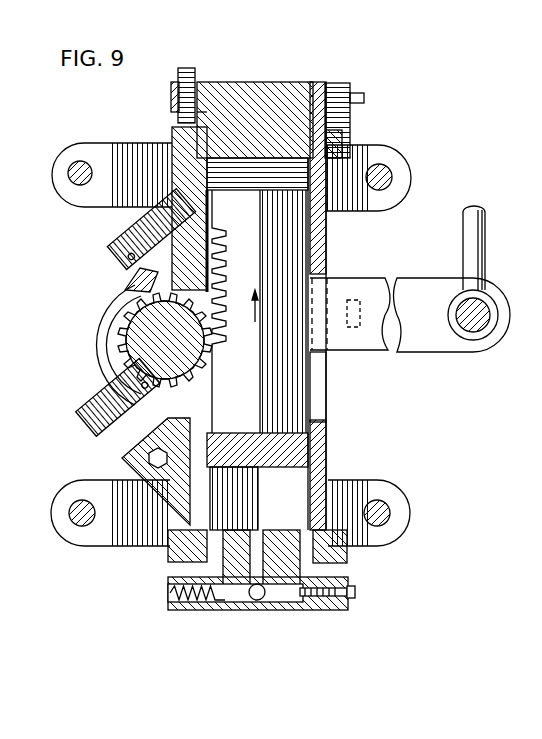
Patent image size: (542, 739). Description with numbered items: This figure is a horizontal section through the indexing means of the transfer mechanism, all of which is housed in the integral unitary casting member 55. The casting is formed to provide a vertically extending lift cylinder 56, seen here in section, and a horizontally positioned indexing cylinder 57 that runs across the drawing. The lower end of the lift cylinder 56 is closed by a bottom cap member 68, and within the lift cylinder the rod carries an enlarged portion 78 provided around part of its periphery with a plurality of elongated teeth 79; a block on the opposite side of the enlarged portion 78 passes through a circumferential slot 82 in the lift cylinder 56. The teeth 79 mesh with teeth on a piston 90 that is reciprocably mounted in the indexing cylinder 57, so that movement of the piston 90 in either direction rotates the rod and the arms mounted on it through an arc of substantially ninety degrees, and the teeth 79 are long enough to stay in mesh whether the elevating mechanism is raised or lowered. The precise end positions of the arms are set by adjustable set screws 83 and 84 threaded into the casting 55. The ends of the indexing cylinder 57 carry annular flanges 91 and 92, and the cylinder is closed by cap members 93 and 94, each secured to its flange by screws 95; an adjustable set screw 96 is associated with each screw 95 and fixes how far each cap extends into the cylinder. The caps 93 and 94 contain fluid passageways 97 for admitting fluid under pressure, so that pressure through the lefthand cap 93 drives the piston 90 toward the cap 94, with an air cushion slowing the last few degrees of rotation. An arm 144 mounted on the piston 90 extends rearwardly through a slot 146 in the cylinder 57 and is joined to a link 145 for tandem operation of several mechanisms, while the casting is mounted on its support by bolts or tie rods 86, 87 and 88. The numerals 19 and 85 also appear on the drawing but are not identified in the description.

The rack 19 is at (226, 262).
The casting member 55 is at (337, 231).
The lift cylinder 56 is at (112, 345).
The indexing cylinder 57 is at (322, 448).
The bottom cap member 68 is at (140, 318).
The enlarged portion 78 is at (128, 352).
The elongated teeth 79 is at (128, 288).
The circumferential slot 82 is at (98, 333).
The adjustable set screw 83 is at (122, 242).
The adjustable set screw 84 is at (120, 440).
The mounting ear 85 is at (80, 160).
The bolt or tie rod 86 is at (390, 172).
The bolt or tie rod 87 is at (80, 530).
The bolt or tie rod 88 is at (380, 527).
The piston 90 is at (318, 263).
The annular flange 91 is at (172, 128).
The annular flange 92 is at (167, 550).
The cap member 93 is at (290, 82).
The cap member 94 is at (254, 601).
The screws 95 is at (333, 83).
The adjustable set screw 96 is at (189, 68).
The fluid passageways 97 is at (283, 598).
The arm 144 is at (430, 292).
The link 145 is at (482, 246).
The slot 146 is at (325, 390).